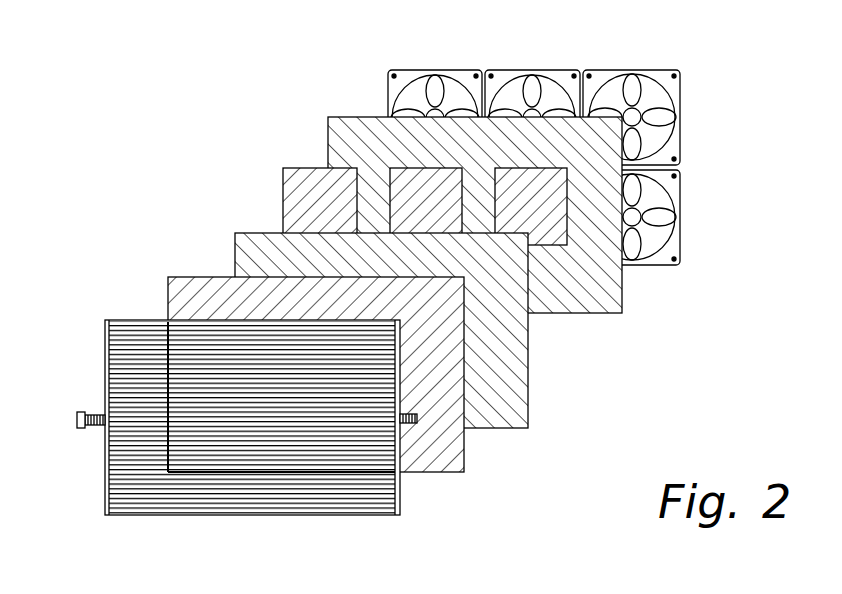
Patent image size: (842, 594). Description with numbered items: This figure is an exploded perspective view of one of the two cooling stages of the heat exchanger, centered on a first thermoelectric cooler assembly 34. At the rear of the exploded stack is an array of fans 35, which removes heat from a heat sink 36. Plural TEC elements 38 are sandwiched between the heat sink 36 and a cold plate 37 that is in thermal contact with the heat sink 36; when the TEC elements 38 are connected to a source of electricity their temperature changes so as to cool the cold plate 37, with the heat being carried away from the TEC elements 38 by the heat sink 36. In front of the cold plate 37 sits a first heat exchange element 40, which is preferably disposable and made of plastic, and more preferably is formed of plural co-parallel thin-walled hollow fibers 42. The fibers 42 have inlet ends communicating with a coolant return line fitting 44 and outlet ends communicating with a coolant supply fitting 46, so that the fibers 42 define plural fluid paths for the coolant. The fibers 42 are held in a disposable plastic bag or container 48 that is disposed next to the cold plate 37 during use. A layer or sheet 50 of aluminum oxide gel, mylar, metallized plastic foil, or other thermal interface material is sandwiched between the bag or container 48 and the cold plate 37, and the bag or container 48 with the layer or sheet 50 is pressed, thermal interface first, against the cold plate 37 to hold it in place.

The first thermoelectric cooler assembly 34 is at (151, 139).
The array of fans 35 is at (453, 96).
The heat sink 36 is at (362, 118).
The cold plate 37 is at (270, 233).
The TEC elements 38 is at (300, 168).
The first heat exchange element 40 is at (143, 321).
The hollow fibers 42 is at (209, 501).
The coolant return line fitting 44 is at (417, 421).
The coolant supply fitting 46 is at (77, 419).
The bag or container 48 is at (400, 497).
The layer or sheet of thermal interface material 50 is at (212, 278).